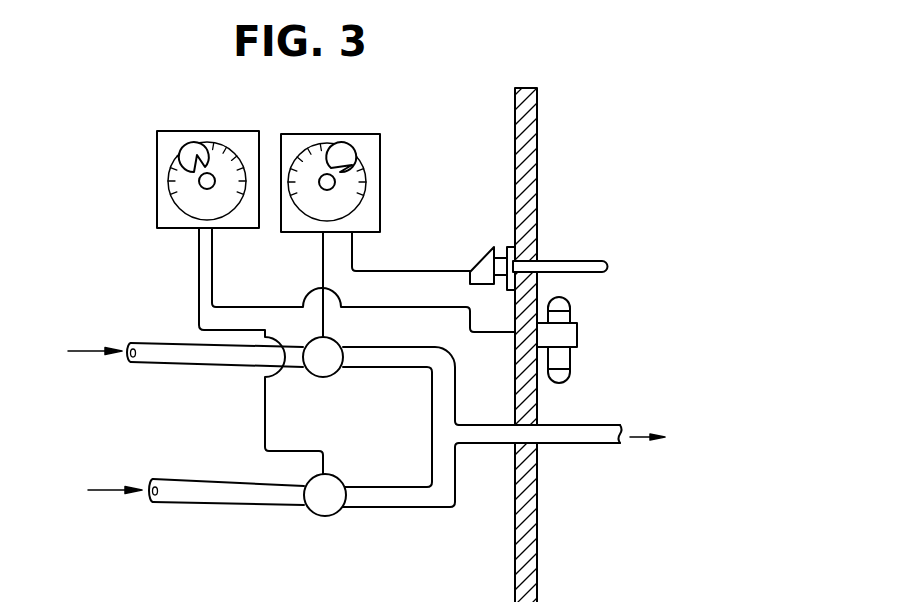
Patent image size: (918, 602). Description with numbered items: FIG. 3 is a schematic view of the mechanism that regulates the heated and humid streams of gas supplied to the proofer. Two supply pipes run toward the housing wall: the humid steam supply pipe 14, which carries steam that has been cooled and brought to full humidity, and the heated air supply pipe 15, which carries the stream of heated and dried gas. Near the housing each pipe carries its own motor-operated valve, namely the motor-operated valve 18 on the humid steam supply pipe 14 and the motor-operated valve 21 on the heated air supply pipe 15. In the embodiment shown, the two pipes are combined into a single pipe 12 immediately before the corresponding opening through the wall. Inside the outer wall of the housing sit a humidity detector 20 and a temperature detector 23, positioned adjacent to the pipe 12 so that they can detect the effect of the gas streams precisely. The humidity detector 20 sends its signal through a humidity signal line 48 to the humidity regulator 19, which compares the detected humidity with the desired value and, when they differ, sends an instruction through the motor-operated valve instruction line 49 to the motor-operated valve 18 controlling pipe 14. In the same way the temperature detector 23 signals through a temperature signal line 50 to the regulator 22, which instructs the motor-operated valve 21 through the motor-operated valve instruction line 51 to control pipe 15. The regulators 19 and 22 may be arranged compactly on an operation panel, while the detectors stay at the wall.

The single pipe 12 is at (570, 445).
The humid steam supply pipe 14 is at (205, 479).
The heated air supply pipe 15 is at (152, 343).
The motor-operated valve 18 is at (323, 517).
The humidity regulator 19 is at (207, 131).
The humidity detector 20 is at (577, 361).
The motor-operated valve 21 is at (337, 372).
The humidity regulator 22 is at (331, 134).
The temperature detector 23 is at (567, 262).
The humidity signal line 48 is at (249, 305).
The motor-operated valve instruction line 49 is at (199, 262).
The temperature signal line 50 is at (418, 270).
The motor-operated valve instruction line 51 is at (323, 252).